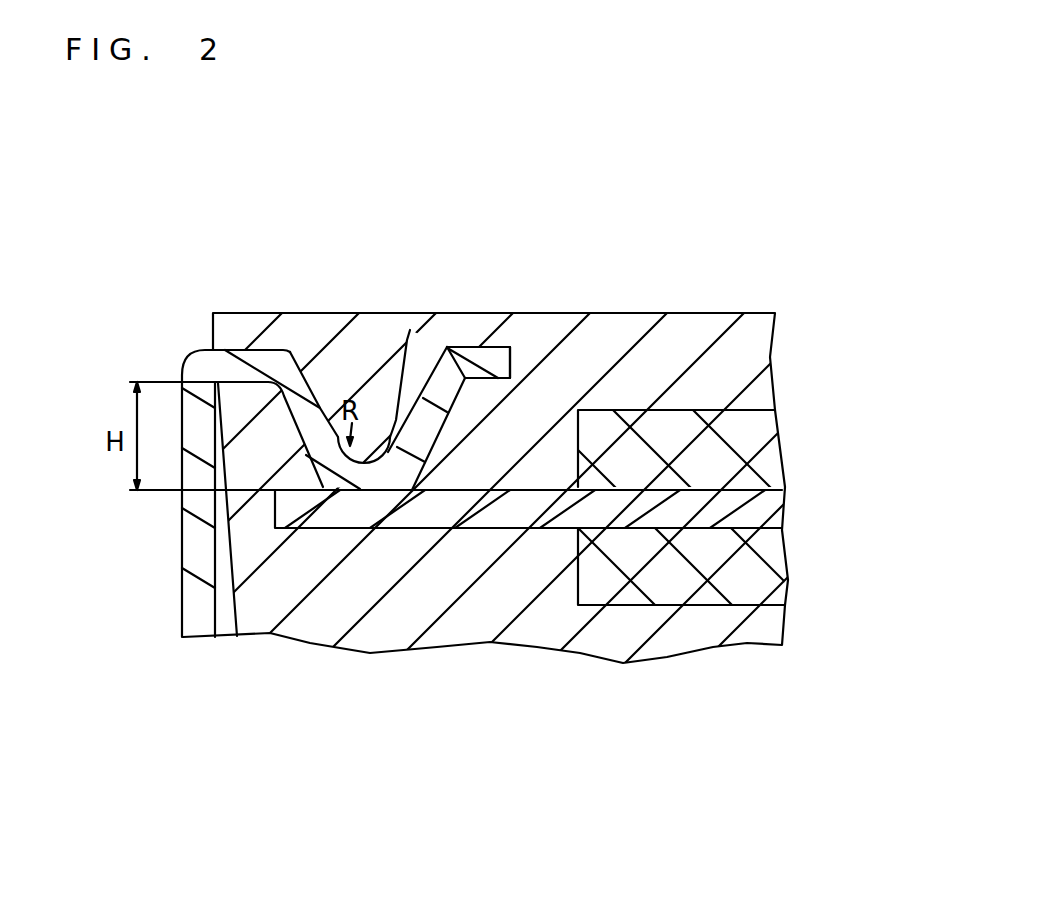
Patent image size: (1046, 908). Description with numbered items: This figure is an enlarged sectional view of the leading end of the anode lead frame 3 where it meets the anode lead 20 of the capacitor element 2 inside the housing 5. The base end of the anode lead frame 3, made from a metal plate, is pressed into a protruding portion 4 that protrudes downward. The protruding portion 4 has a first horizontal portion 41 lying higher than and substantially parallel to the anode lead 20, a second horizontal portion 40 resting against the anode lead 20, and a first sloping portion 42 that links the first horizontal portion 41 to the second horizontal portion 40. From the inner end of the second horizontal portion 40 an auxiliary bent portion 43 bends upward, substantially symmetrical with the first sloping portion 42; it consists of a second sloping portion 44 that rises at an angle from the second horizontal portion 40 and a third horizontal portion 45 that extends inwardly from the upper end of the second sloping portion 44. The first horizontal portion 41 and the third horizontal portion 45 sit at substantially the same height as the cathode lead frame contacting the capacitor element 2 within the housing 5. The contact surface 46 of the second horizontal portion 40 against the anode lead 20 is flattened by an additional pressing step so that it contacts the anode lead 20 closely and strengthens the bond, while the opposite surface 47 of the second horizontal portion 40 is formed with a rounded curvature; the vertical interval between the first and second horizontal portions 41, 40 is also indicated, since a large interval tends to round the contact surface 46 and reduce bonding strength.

The capacitor element 2 is at (696, 593).
The anode lead frame 3 is at (190, 557).
The protruding portion 4 is at (437, 168).
The housing 5 is at (690, 322).
The anode lead 20 is at (497, 520).
The second horizontal portion 40 is at (368, 473).
The first horizontal portion 41 is at (285, 349).
The first sloping portion 42 is at (358, 380).
The auxiliary bent portion 43 is at (555, 236).
The second sloping portion 44 is at (435, 372).
The third horizontal portion 45 is at (493, 360).
The contact surface 46 is at (390, 490).
The surface 47 is at (410, 330).